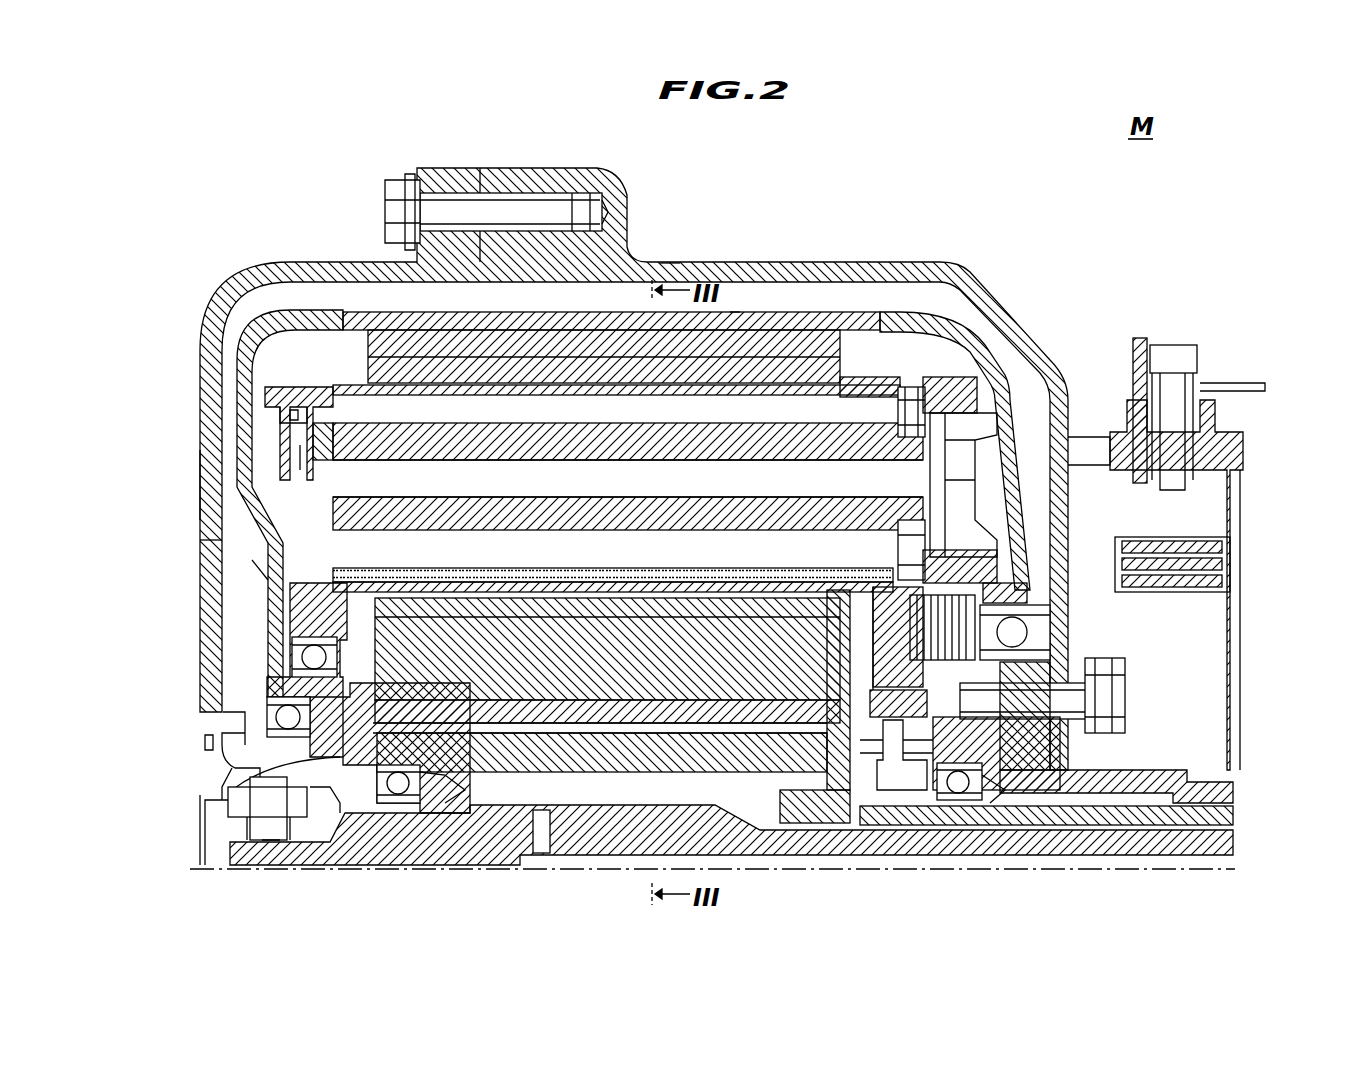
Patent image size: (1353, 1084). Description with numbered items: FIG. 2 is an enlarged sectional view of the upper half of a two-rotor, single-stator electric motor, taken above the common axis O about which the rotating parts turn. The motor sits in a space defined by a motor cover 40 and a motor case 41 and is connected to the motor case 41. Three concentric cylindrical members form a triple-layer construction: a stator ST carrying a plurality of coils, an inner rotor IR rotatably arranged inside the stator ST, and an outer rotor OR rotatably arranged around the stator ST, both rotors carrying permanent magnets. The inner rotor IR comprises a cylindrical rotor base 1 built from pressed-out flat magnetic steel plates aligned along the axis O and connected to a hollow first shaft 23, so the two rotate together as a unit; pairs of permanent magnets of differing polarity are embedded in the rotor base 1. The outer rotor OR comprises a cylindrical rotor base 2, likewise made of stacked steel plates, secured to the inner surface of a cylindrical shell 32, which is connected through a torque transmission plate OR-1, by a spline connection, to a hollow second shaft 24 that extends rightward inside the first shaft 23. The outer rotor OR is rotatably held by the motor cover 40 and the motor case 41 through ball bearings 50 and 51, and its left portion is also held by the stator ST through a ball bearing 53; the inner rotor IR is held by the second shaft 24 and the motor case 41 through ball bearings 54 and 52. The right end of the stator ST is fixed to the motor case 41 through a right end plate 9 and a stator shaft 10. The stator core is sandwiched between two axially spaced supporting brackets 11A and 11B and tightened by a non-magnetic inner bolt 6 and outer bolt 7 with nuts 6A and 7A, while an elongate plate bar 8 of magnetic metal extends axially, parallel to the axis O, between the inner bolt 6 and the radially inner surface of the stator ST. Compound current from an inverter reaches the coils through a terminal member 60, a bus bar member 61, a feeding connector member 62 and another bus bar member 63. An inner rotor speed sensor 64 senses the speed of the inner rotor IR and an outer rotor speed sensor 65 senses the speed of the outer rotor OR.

The rotor base 1 is at (570, 620).
The rotor base 2 is at (505, 355).
The inner bolt 6 is at (252, 583).
The nut 6A is at (1040, 372).
The outer bolt 7 is at (345, 405).
The nut 7A is at (918, 407).
The elongate plate bar 8 is at (530, 596).
The right end plate 9 is at (910, 415).
The stator shaft 10 is at (1015, 662).
The supporting bracket 11A is at (863, 383).
The supporting bracket 11B is at (300, 390).
The first shaft 23 is at (1097, 817).
The second shaft 24 is at (450, 815).
The cylindrical shell 32 is at (733, 320).
The motor cover 40 is at (330, 268).
The motor case 41 is at (663, 262).
The ball bearing 50 is at (262, 760).
The ball bearing 51 is at (1030, 632).
The ball bearing 52 is at (975, 805).
The ball bearing 53 is at (300, 648).
The ball bearing 54 is at (400, 805).
The terminal member 60 is at (1208, 388).
The bus bar member 61 is at (1217, 538).
The feeding connector member 62 is at (1115, 698).
The bus bar member 63 is at (1025, 615).
The inner rotor speed sensor 64 is at (893, 800).
The outer rotor speed sensor 65 is at (270, 810).
The outer rotor OR is at (340, 362).
The torque transmission plate OR-1 is at (222, 548).
The inner rotor IR is at (345, 683).
The stator ST is at (262, 452).
The common axis O is at (1165, 872).